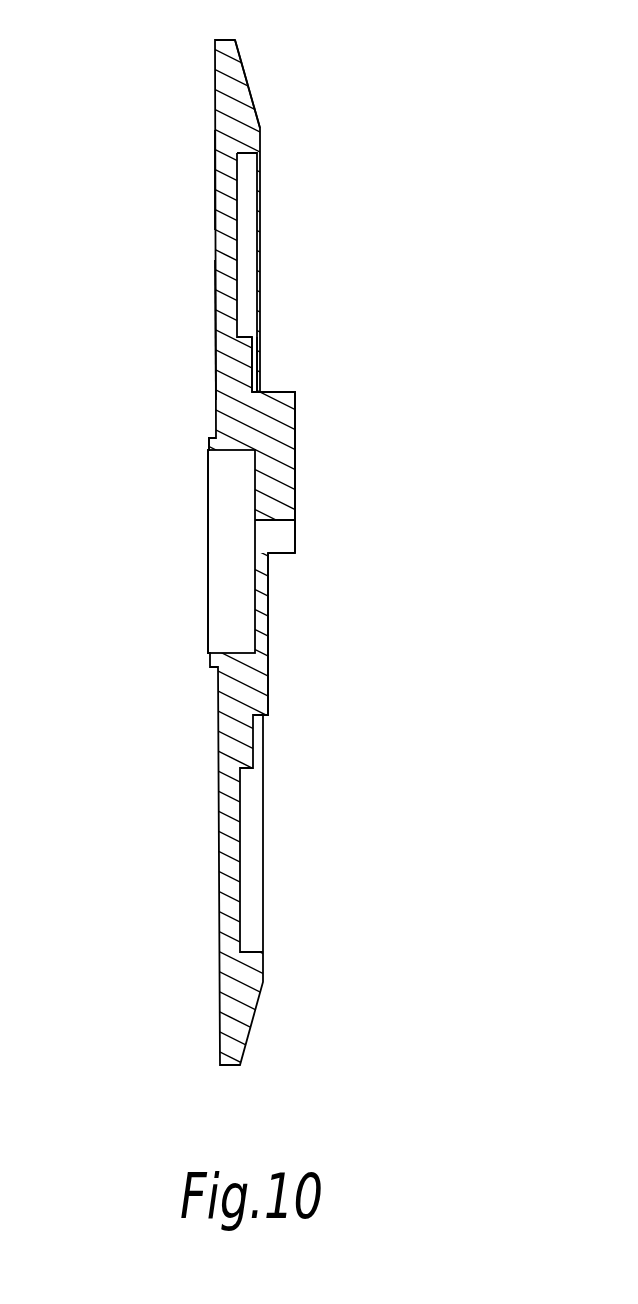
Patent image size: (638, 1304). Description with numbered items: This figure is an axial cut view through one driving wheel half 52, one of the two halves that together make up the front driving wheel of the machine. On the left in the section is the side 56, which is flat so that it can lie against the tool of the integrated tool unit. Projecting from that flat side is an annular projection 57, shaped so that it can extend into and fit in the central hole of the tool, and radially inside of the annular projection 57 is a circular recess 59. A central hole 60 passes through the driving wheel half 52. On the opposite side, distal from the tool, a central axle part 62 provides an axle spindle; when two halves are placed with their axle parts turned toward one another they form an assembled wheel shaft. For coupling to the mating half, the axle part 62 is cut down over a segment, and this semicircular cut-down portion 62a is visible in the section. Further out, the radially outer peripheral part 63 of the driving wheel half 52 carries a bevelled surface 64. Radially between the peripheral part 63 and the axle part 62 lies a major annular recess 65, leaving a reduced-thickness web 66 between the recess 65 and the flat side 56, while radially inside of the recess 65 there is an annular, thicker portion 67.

The driving wheel half 52 is at (206, 236).
The side 56 is at (215, 315).
The annular projection 57 is at (208, 444).
The circular recess 59 is at (228, 500).
The central hole 60 is at (279, 537).
The central axle part 62 is at (297, 442).
The cut-down portion 62a is at (271, 630).
The radially outer peripheral part 63 is at (245, 143).
The bevelled surface 64 is at (246, 84).
The annular recess 65 is at (243, 215).
The reduced-thickness web 66 is at (215, 185).
The annular thicker portion 67 is at (253, 364).